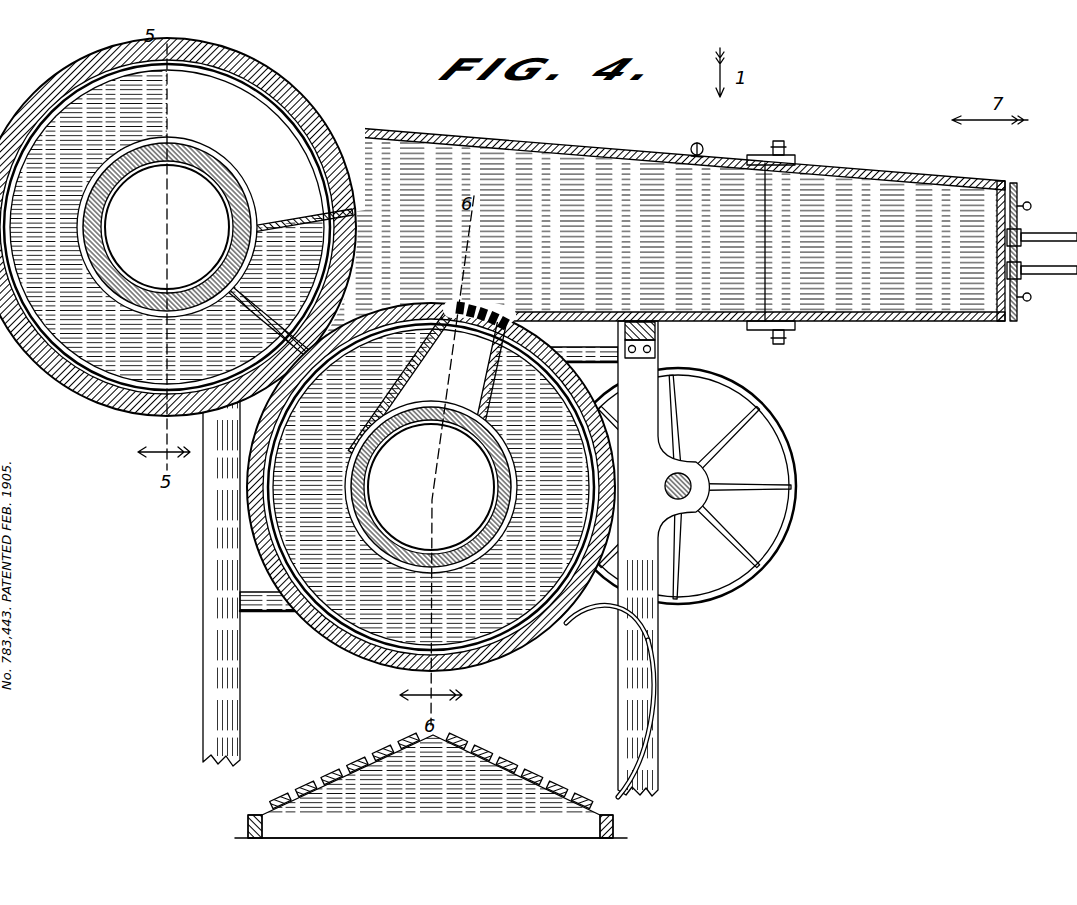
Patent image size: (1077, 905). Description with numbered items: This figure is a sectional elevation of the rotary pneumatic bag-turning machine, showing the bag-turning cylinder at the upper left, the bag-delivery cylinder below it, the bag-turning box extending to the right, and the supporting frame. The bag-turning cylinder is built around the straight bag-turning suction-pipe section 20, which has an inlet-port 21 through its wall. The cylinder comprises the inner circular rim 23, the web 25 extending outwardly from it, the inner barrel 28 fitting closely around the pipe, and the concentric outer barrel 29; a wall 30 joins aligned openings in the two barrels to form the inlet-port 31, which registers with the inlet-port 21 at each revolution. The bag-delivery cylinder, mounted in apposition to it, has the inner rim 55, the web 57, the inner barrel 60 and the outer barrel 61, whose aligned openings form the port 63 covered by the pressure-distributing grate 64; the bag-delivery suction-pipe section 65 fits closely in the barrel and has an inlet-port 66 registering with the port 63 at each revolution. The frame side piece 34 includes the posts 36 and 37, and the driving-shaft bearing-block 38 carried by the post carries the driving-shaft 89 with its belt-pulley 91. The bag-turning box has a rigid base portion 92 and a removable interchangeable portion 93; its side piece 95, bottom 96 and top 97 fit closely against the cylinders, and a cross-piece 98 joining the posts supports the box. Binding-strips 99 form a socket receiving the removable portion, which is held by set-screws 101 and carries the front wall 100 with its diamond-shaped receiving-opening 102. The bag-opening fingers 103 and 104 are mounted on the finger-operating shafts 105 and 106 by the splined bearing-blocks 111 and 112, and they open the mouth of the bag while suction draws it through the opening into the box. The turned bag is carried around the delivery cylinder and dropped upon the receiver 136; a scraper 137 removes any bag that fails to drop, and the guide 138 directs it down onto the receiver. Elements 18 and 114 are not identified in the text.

The bracket 18 is at (272, 611).
The bag-turning suction-pipe section 20 is at (106, 226).
The inlet-port 21 is at (230, 250).
The inner circular rim 23 is at (128, 306).
The web 25 is at (275, 58).
The inner barrel 28 is at (193, 149).
The outer barrel 29 is at (182, 226).
The wall 30 is at (292, 216).
The inlet-port 31 is at (265, 311).
The side piece 34 is at (581, 344).
The post 36 is at (199, 580).
The post 37 is at (650, 623).
The driving-shaft bearing-block 38 is at (686, 468).
The inner rim 55 is at (517, 466).
The web 57 is at (431, 487).
The inner barrel 60 is at (498, 498).
The outer barrel 61 is at (345, 645).
The port 63 is at (462, 342).
The pressure-distributing grate 64 is at (474, 311).
The bag-delivery suction-pipe section 65 is at (497, 457).
The inlet-port 66 is at (397, 543).
The driving-shaft 89 is at (694, 492).
The belt-pulley 91 is at (788, 444).
The rigid base portion 92 is at (593, 151).
The removable interchangeable portion 93 is at (872, 177).
The side piece 95 is at (492, 170).
The bottom 96 is at (666, 311).
The top 97 is at (346, 128).
The cross-piece 98 is at (659, 333).
The binding-strip 99 is at (758, 155).
The front wall 100 is at (997, 200).
The set-screw 101 is at (785, 148).
The receiving-opening 102 is at (1008, 236).
The bag-opening finger 103 is at (1029, 204).
The bag-opening finger 104 is at (1030, 299).
The finger-operating shaft 105 is at (1049, 247).
The finger-operating shaft 106 is at (1049, 280).
The bearing-block 111 is at (1021, 235).
The bearing-block 112 is at (1007, 269).
The screw 114 is at (694, 144).
The receiver 136 is at (431, 780).
The scraper 137 is at (572, 629).
The guide 138 is at (640, 752).